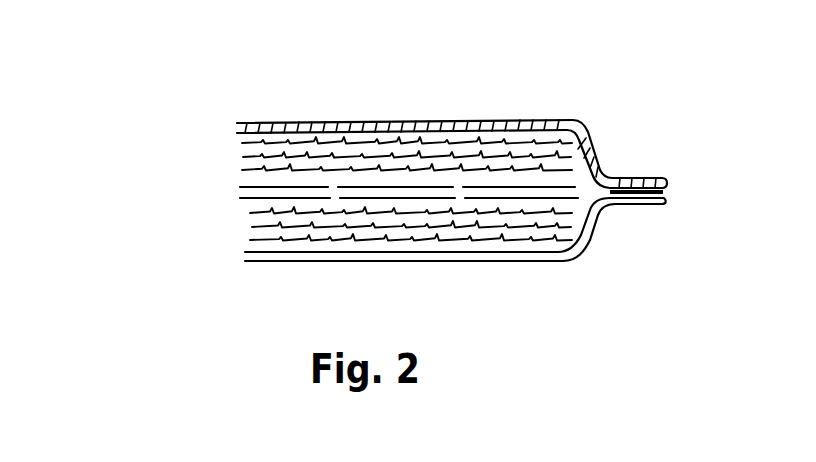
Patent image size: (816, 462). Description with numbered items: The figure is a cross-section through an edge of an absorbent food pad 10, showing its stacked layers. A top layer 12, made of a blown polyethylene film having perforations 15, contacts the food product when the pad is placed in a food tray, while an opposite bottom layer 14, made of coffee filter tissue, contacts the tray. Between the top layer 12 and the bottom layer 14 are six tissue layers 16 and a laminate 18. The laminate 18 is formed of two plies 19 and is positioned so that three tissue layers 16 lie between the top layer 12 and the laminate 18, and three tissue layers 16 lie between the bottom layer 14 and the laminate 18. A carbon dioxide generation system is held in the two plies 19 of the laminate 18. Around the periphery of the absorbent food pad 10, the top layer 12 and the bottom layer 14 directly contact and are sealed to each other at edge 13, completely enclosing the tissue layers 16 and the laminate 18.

The absorbent food pad 10 is at (116, 119).
The top layer 12 is at (310, 122).
The edge 13 is at (617, 172).
The bottom layer 14 is at (483, 260).
The perforations 15 is at (413, 125).
The tissue layer 16 is at (240, 150).
The laminate 18 is at (230, 190).
The plies 19 is at (247, 182).